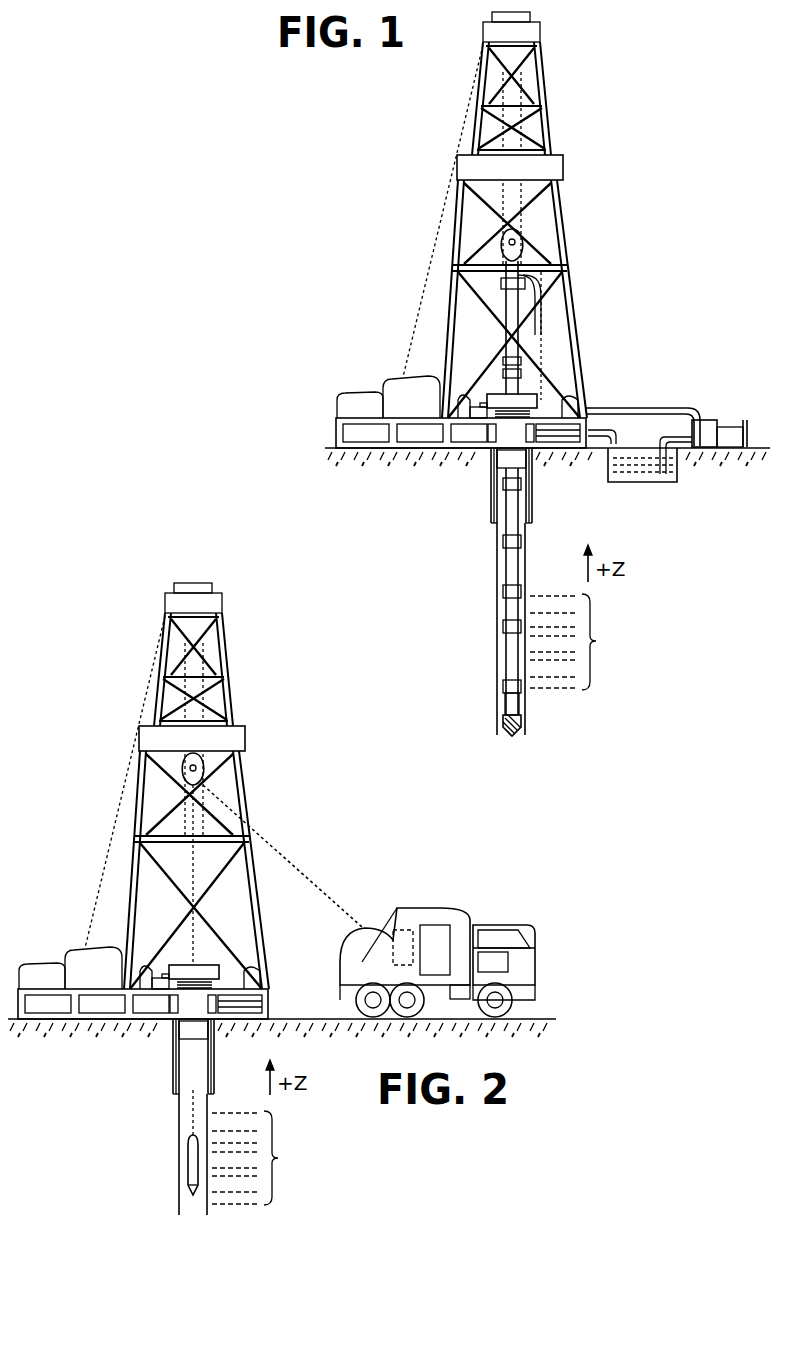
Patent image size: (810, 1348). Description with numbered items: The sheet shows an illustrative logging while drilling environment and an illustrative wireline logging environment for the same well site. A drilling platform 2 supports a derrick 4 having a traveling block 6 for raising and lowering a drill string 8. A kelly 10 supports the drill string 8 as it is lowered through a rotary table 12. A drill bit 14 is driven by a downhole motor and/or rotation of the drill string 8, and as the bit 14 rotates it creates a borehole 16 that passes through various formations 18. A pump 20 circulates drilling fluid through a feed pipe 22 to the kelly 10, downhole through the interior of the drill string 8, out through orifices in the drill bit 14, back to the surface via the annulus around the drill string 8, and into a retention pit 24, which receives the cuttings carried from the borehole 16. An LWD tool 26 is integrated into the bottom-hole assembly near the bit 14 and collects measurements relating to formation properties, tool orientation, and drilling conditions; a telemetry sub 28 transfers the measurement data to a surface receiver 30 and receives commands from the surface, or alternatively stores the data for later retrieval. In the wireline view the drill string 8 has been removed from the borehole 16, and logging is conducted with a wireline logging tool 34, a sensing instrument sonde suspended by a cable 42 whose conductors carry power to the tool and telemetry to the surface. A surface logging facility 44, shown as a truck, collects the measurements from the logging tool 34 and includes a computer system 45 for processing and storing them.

In FIG. 1, the drilling platform 2 is at (340, 421).
In FIG. 2, the drilling platform 2 is at (270, 999).
In FIG. 1, the derrick 4 is at (548, 130).
In FIG. 2, the derrick 4 is at (258, 961).
In FIG. 1, the traveling block 6 is at (530, 236).
In FIG. 2, the traveling block 6 is at (214, 766).
In FIG. 1, the drill string 8 is at (519, 567).
In FIG. 1, the kelly 10 is at (511, 302).
In FIG. 1, the rotary table 12 is at (530, 393).
In FIG. 2, the rotary table 12 is at (210, 965).
In FIG. 1, the drill bit 14 is at (520, 720).
In FIG. 1, the borehole 16 is at (527, 572).
In FIG. 2, the borehole 16 is at (179, 1178).
In FIG. 1, the formations 18 is at (578, 642).
In FIG. 2, the formations 18 is at (260, 1158).
In FIG. 1, the pump 20 is at (706, 426).
In FIG. 1, the feed pipe 22 is at (652, 408).
In FIG. 1, the retention pit 24 is at (622, 468).
In FIG. 1, the LWD tool 26 is at (505, 700).
In FIG. 1, the telemetry sub 28 is at (503, 683).
In FIG. 1, the surface receiver 30 is at (517, 360).
In FIG. 2, the wireline logging tool 34 is at (190, 1163).
In FIG. 2, the cable 42 is at (283, 856).
In FIG. 2, the surface logging facility 44 is at (458, 912).
In FIG. 2, the computer system 45 is at (398, 932).